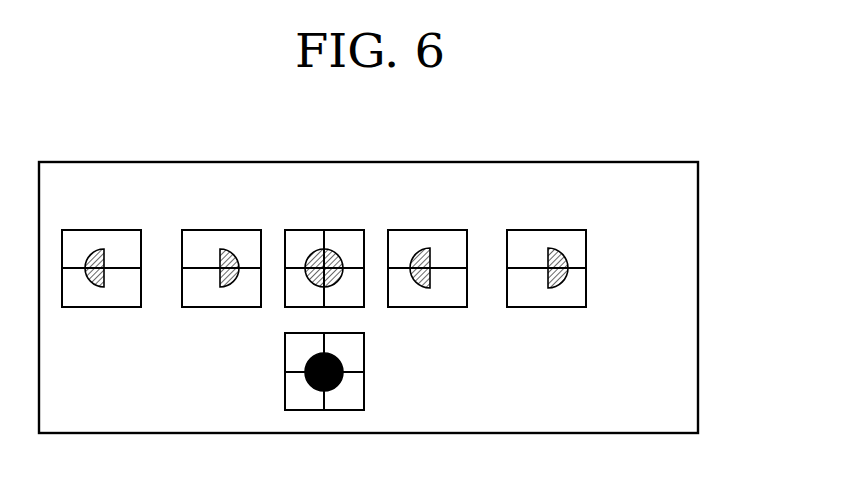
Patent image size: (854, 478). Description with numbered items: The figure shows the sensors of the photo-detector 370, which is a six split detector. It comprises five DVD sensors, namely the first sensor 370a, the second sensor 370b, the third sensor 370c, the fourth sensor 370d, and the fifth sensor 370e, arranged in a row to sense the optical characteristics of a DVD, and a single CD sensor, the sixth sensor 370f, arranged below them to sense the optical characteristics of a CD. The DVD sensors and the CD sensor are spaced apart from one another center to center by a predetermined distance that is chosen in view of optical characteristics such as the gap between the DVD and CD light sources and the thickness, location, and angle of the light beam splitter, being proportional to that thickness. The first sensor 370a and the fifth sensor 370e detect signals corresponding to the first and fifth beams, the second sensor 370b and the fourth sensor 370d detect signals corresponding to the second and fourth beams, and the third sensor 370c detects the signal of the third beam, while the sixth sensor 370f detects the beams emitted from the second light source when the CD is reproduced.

The photo-detector 370 is at (698, 200).
The first sensor 370a is at (100, 230).
The second sensor 370b is at (220, 230).
The third sensor 370c is at (322, 230).
The fourth sensor 370d is at (428, 230).
The fifth sensor 370e is at (546, 230).
The sixth sensor 370f is at (364, 353).